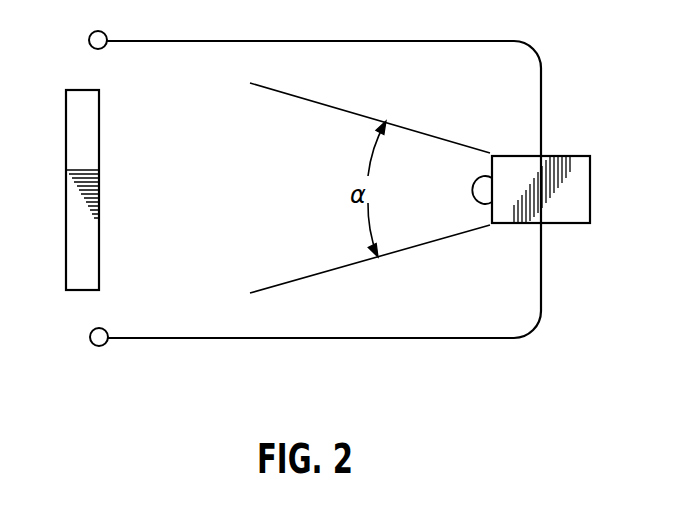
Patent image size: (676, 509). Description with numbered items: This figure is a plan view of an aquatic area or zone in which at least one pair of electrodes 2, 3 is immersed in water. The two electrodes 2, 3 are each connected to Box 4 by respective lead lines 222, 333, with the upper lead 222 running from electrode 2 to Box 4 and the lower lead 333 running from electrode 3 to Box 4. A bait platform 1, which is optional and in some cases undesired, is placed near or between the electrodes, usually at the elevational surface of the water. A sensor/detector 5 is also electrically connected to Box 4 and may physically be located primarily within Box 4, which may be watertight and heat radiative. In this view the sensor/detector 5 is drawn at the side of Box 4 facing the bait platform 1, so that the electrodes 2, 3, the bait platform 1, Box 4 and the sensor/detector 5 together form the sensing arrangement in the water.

The bait platform 1 is at (99, 175).
The electrode 2 is at (89, 40).
The electrode 3 is at (90, 337).
The Box 4 is at (505, 155).
The sensor/detector 5 is at (482, 206).
The upper lead line 222 is at (324, 102).
The lower lead line 333 is at (324, 264).